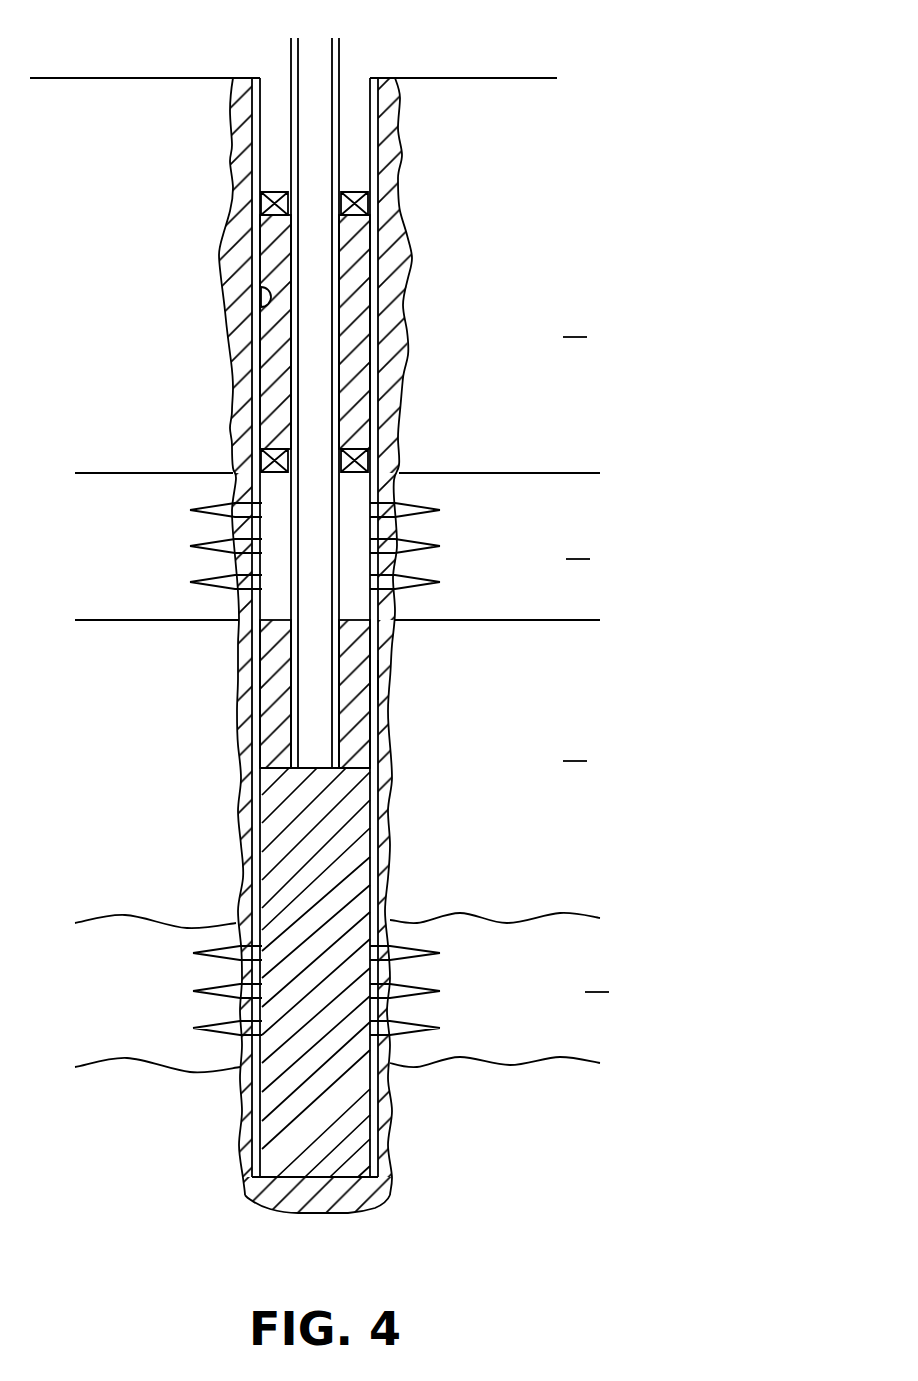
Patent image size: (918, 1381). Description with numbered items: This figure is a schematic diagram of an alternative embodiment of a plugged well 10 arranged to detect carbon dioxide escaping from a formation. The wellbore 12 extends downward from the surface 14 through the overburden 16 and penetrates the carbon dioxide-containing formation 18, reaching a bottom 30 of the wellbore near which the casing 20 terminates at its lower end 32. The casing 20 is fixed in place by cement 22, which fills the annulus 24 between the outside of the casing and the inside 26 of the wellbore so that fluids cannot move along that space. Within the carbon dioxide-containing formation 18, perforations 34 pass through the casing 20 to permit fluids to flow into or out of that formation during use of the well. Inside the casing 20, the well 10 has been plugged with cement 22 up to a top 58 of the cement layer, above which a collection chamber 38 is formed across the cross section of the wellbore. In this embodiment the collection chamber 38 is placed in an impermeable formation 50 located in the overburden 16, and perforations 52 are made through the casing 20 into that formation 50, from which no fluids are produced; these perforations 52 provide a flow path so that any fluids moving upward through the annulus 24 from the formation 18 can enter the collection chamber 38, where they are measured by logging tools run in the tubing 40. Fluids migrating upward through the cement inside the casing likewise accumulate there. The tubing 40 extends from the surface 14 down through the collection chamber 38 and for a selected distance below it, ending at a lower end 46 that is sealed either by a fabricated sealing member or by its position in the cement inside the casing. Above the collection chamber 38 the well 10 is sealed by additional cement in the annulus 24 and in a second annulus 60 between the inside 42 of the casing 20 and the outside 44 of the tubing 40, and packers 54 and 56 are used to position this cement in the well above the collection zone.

The well 10 is at (522, 200).
The wellbore 12 is at (410, 252).
The surface 14 is at (485, 77).
The overburden 16 is at (575, 535).
The carbon dioxide-containing formation 18 is at (343, 993).
The casing 20 is at (375, 273).
The cement 22 is at (363, 325).
The annulus 24 is at (390, 683).
The inside of wellbore 26 is at (391, 806).
The bottom of wellbore 30 is at (333, 1218).
The lower end of casing 32 is at (380, 1168).
The perforations 34 is at (193, 1028).
The collection chamber 38 is at (350, 498).
The tubing 40 is at (295, 402).
The inside of casing 42 is at (268, 290).
The outside of tubing 44 is at (330, 351).
The lower end of tubing 46 is at (297, 763).
The impermeable formation 50 is at (337, 546).
The perforations 52 is at (190, 583).
The packer 54 is at (240, 455).
The packer 56 is at (400, 192).
The top of cement layer 58 is at (342, 620).
The second annulus 60 is at (272, 247).